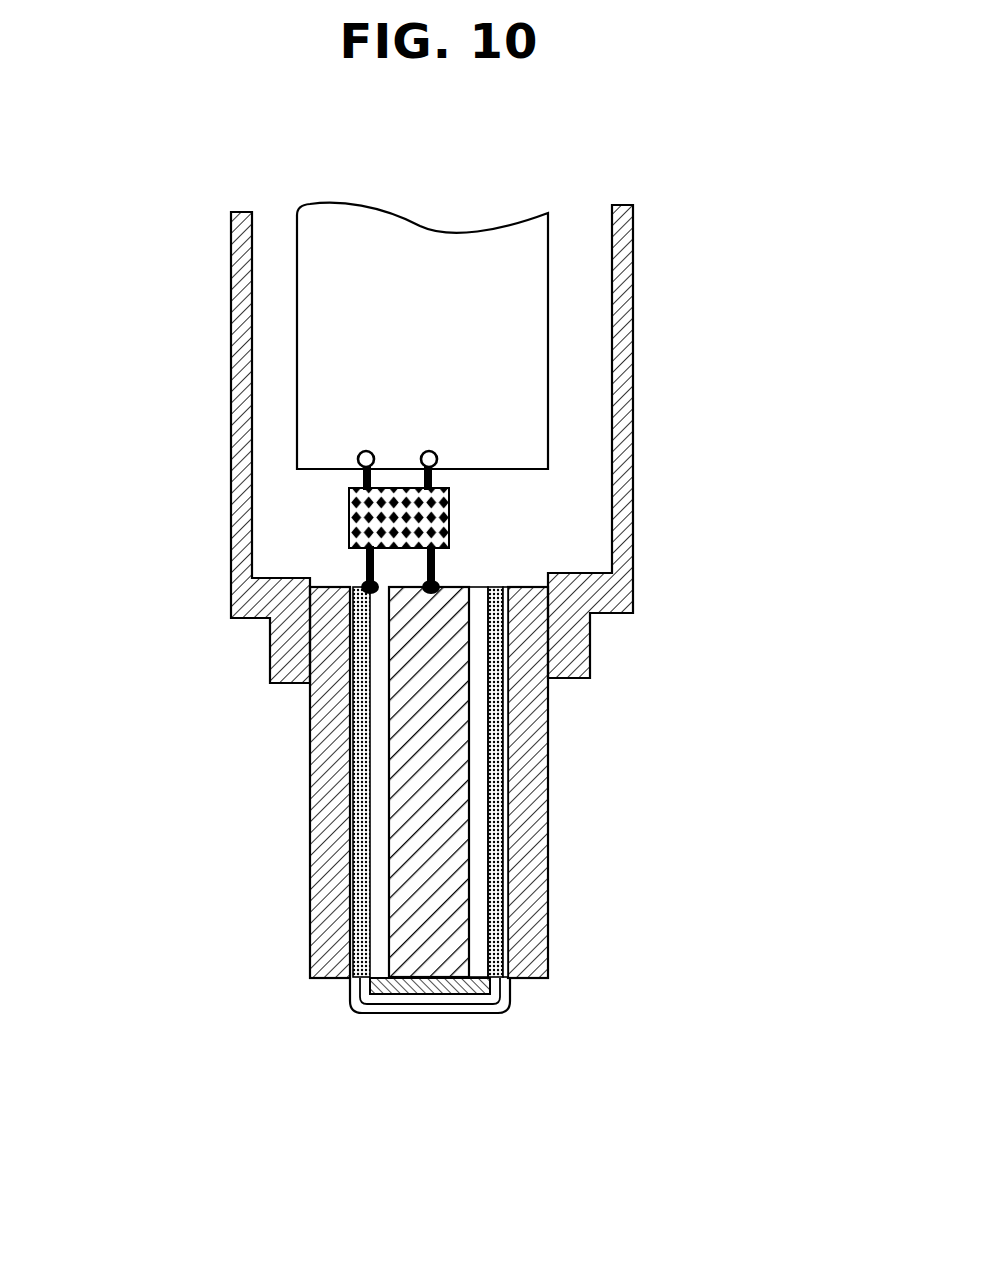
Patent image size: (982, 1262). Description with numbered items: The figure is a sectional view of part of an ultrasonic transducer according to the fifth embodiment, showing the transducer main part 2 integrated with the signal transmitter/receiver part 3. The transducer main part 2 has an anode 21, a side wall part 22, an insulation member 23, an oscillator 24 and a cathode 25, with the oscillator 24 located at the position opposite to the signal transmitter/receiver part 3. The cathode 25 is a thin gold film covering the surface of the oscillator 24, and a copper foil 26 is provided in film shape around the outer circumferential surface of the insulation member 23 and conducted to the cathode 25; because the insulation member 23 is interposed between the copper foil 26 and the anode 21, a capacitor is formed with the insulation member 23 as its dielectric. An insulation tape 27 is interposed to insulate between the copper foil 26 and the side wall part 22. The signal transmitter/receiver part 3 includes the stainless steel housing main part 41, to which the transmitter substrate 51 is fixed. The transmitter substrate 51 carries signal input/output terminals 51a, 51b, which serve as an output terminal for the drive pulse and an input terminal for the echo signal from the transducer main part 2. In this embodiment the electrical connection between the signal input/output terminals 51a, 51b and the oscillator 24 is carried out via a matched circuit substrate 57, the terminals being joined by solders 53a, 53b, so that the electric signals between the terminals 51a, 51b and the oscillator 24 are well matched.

The transducer main part 2 is at (487, 876).
The signal transmitter/receiver part 3 is at (645, 265).
The anode 21 is at (442, 918).
The side wall part 22 is at (530, 710).
The insulation member 23 is at (478, 888).
The oscillator 24 is at (398, 992).
The cathode 25 is at (453, 1010).
The copper foil 26 is at (500, 828).
The insulation tape 27 is at (512, 775).
The housing main part 41 is at (234, 298).
The transmitter substrate 51 is at (500, 383).
The signal input/output terminal 51a is at (434, 452).
The signal input/output terminal 51b is at (360, 454).
The solder 53a is at (433, 480).
The solder 53b is at (360, 481).
The matched circuit substrate 57 is at (450, 530).